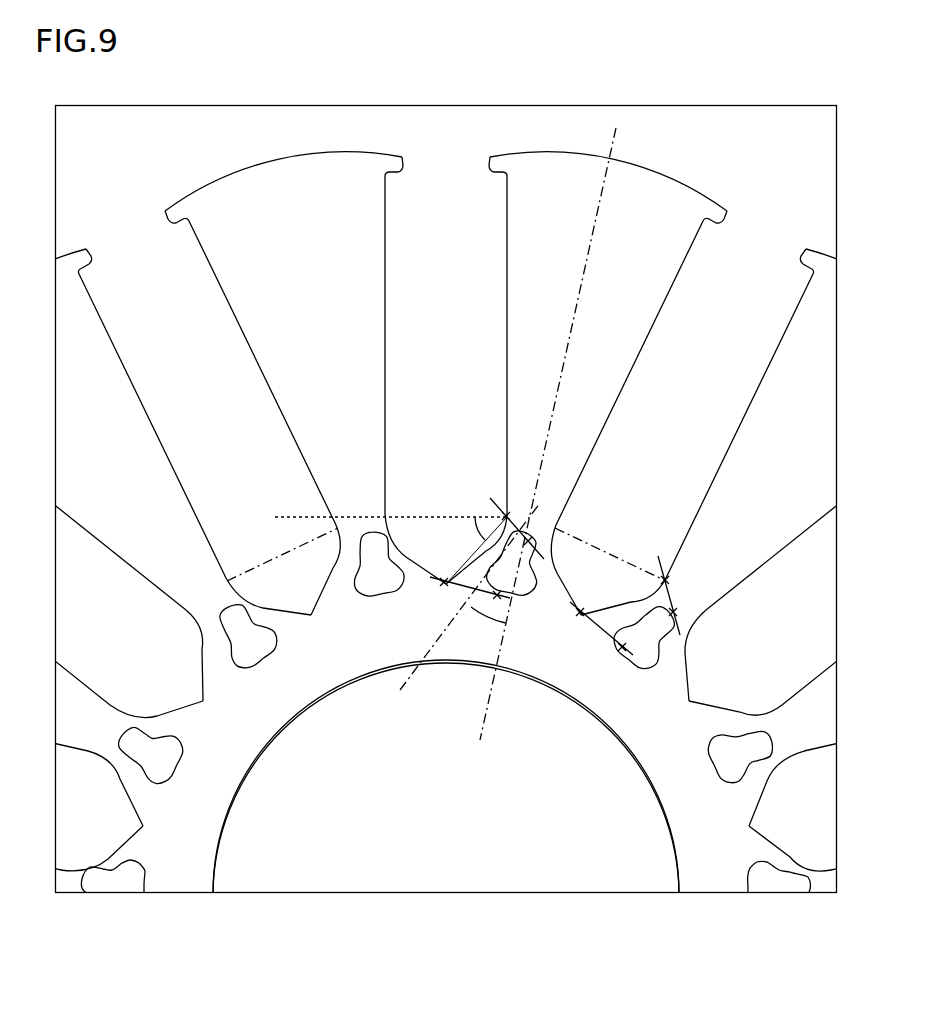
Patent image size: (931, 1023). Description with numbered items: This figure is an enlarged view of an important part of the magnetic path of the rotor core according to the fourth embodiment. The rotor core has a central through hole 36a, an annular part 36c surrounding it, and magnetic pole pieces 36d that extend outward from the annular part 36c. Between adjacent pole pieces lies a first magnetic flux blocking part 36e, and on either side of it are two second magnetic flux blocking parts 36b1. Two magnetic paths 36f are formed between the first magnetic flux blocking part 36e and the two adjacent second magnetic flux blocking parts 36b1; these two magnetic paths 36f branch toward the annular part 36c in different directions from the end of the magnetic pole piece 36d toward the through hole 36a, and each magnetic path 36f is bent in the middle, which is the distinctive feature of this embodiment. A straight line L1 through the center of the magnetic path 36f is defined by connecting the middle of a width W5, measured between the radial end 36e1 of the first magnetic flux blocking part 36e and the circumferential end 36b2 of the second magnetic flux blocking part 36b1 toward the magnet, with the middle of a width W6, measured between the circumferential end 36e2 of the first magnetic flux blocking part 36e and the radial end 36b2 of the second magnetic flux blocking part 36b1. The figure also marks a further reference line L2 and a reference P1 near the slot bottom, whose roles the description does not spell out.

The through hole 36a is at (470, 853).
The second magnetic flux blocking part 36b1 is at (388, 512).
The end of the second magnetic flux blocking part 36b2 is at (570, 585).
The annular part 36c is at (546, 652).
The magnetic pole piece 36d is at (652, 188).
The first magnetic flux blocking part 36e is at (372, 585).
The radial end of the first magnetic flux blocking part 36e1 is at (695, 604).
The circumferential end of the first magnetic flux blocking part 36e2 is at (615, 625).
The magnetic path 36f is at (342, 593).
The width W5 is at (503, 509).
The width W6 is at (467, 592).
The straight line L1 is at (445, 632).
The reference line L2 is at (600, 262).
The reference point/line P1 is at (293, 517).